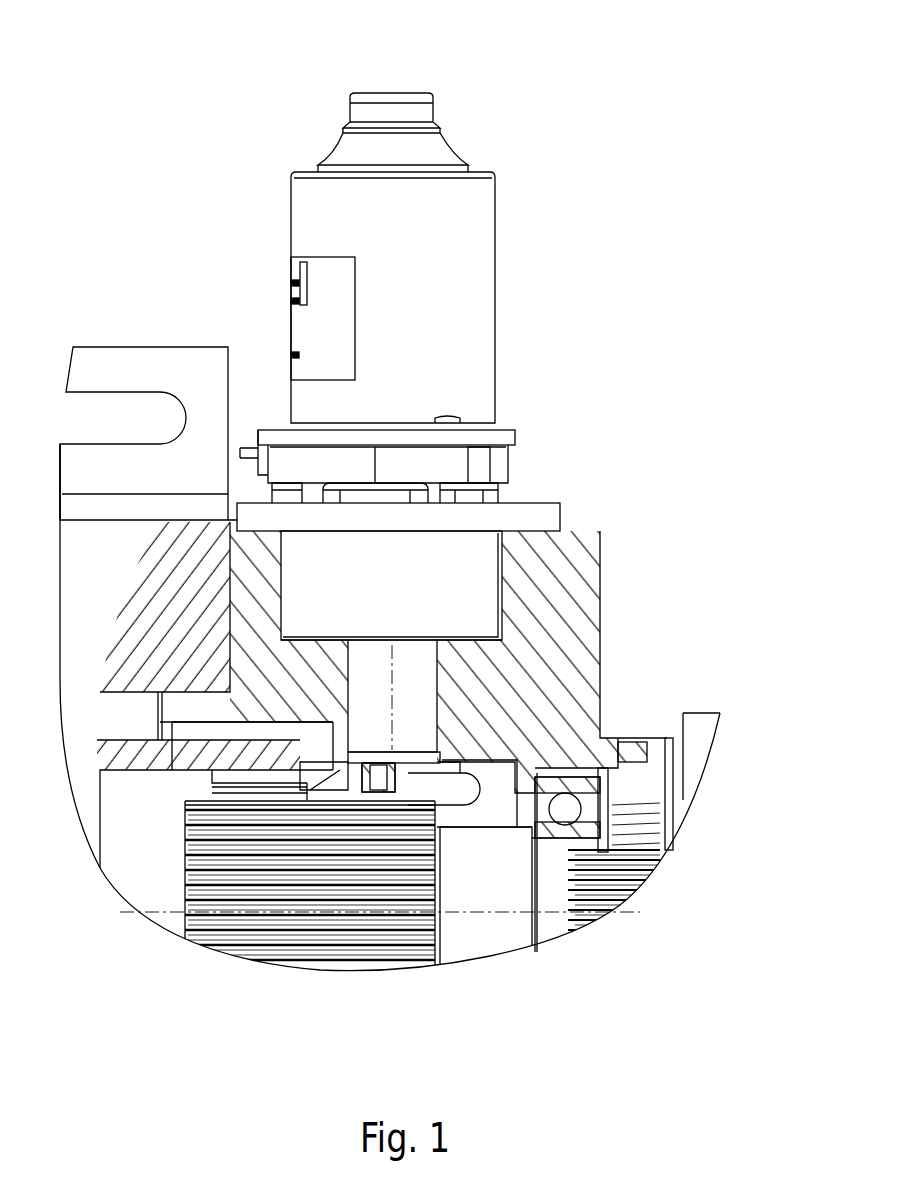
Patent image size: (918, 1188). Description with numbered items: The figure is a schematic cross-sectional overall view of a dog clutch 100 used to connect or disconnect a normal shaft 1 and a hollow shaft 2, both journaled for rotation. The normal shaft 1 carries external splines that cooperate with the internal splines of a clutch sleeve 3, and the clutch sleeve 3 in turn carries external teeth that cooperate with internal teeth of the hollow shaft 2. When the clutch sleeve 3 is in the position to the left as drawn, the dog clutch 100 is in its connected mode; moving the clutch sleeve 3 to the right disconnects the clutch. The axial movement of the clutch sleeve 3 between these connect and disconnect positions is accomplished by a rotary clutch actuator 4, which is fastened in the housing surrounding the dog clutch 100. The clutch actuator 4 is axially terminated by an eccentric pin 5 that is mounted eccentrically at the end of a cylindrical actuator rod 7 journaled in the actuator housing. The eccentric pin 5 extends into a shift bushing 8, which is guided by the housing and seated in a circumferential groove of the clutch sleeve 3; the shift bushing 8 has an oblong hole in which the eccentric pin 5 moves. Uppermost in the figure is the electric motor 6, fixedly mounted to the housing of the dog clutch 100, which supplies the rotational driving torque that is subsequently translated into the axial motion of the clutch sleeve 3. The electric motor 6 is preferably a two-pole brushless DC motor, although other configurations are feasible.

The dog clutch 100 is at (707, 206).
The normal shaft 1 is at (512, 903).
The hollow shaft 2 is at (170, 757).
The clutch sleeve 3 is at (297, 792).
The clutch actuator 4 is at (620, 548).
The eccentric pin 5 is at (380, 775).
The electric motor 6 is at (494, 253).
The actuator rod 7 is at (410, 703).
The shift bushing 8 is at (370, 772).